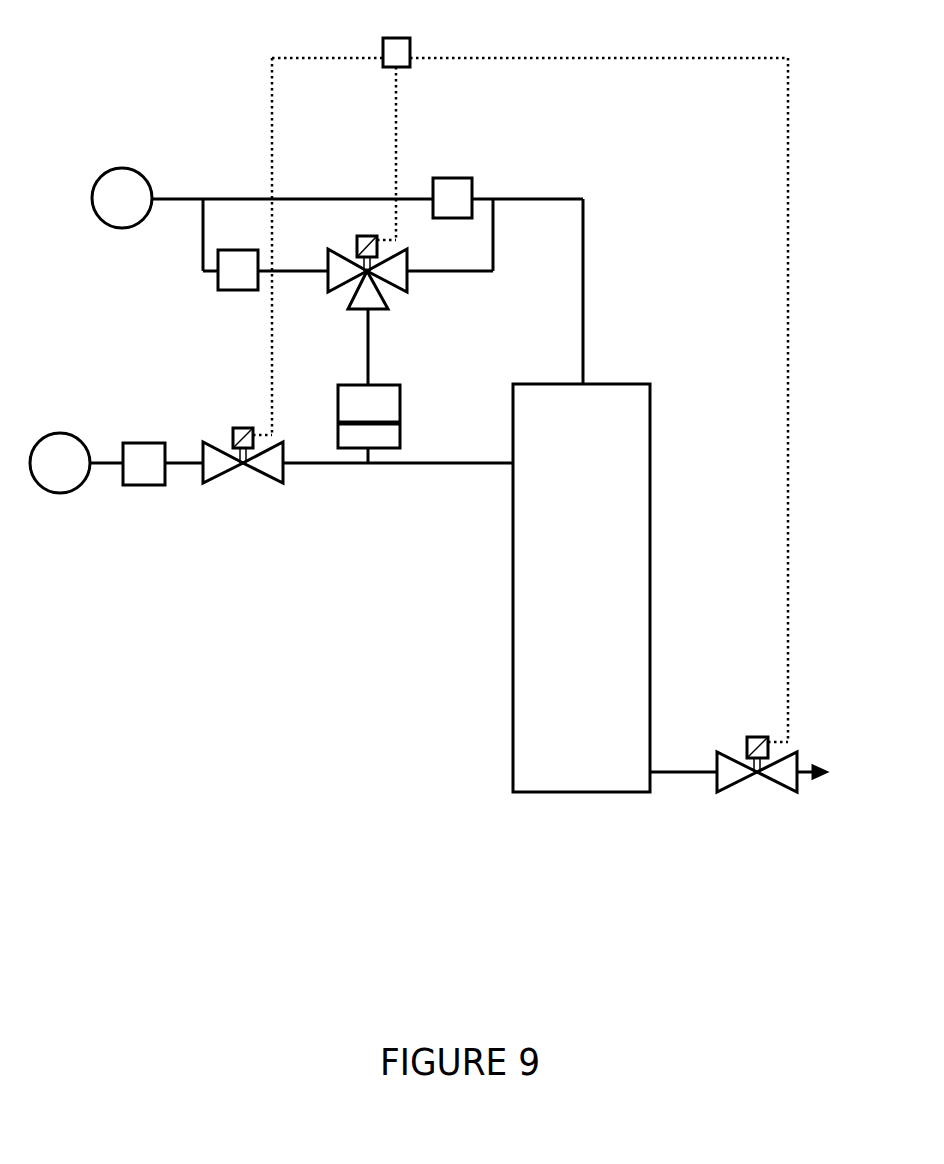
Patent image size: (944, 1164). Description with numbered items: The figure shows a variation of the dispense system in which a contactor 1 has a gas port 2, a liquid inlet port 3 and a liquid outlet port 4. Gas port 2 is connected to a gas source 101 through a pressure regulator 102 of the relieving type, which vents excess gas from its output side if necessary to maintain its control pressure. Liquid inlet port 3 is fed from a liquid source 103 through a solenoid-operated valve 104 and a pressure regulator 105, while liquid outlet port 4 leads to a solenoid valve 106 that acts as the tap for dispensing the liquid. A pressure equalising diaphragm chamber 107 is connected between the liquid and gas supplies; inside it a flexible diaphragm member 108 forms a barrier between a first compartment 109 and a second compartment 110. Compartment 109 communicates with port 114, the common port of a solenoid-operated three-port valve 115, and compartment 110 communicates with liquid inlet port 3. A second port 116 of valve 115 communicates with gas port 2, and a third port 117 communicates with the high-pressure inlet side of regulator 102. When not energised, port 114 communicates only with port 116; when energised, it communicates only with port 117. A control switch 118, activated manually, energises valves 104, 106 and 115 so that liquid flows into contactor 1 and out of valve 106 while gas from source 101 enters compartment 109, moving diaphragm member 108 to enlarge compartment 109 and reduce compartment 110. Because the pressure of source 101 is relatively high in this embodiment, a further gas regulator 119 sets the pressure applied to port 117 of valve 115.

The contactor 1 is at (581, 588).
The gas port 2 is at (585, 382).
The liquid inlet port 3 is at (510, 465).
The liquid outlet port 4 is at (652, 772).
The gas source 101 is at (131, 187).
The pressure regulator 102 is at (448, 185).
The liquid source 103 is at (80, 452).
The solenoid-operated valve 104 is at (226, 438).
The pressure regulator 105 is at (153, 477).
The solenoid valve 106 is at (743, 738).
The pressure equalising diaphragm chamber 107 is at (376, 404).
The flexible diaphragm member 108 is at (372, 420).
The first compartment 109 is at (377, 397).
The second compartment 110 is at (382, 435).
The port 114 is at (370, 315).
The solenoid-operated 3-port valve 115 is at (357, 248).
The second port 116 is at (408, 278).
The third port 117 is at (325, 267).
The control switch 118 is at (408, 38).
The gas regulator 119 is at (248, 284).